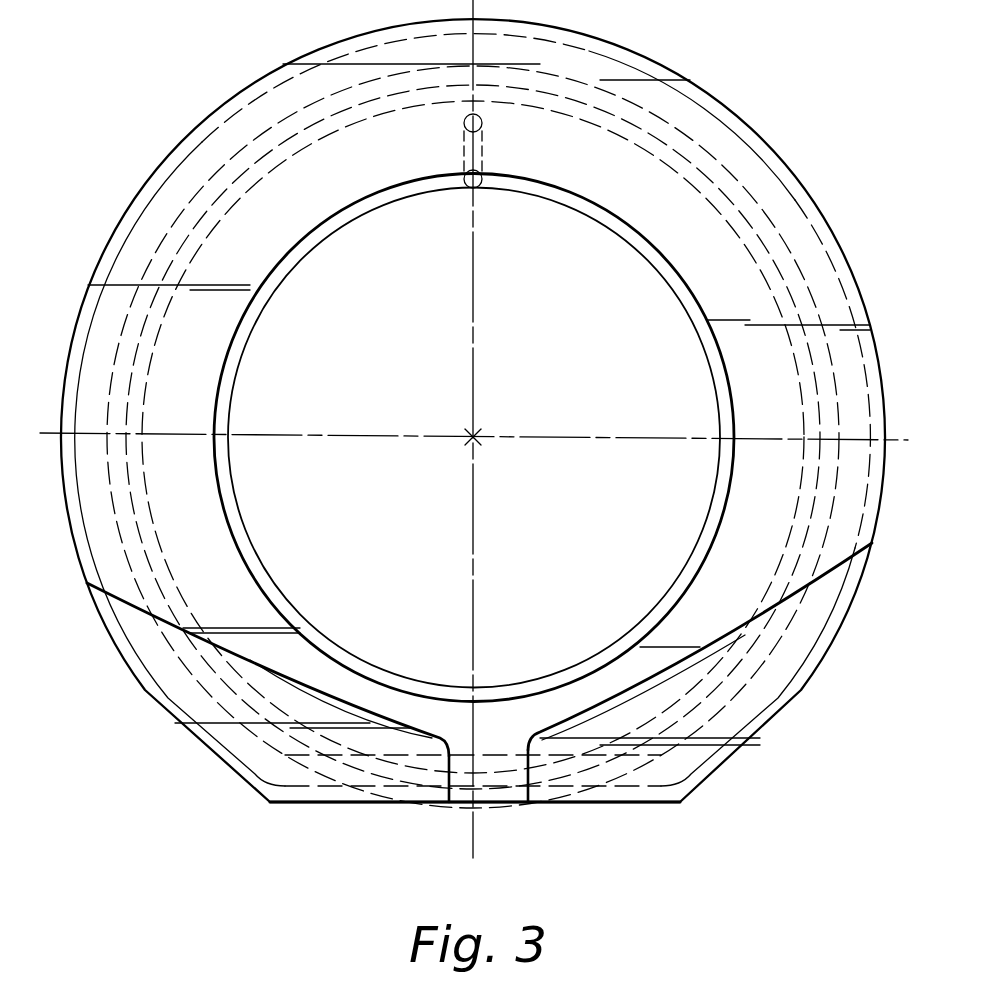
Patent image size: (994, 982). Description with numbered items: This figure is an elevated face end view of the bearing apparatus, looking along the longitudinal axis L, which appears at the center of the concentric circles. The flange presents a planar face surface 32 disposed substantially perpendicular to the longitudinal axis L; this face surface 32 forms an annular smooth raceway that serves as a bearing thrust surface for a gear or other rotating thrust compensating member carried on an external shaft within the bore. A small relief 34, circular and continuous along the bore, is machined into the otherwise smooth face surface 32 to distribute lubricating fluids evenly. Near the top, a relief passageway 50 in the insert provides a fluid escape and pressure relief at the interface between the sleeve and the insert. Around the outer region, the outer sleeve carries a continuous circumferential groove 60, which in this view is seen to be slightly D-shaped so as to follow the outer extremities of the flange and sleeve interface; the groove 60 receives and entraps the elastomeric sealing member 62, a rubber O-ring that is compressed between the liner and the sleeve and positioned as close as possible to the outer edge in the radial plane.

The face surface 32 is at (406, 164).
The relief 34 is at (690, 305).
The relief passageway 50 is at (483, 152).
The circumferential groove 60 is at (210, 710).
The elastomeric sealing member 62 is at (236, 736).
The longitudinal axis L is at (477, 432).